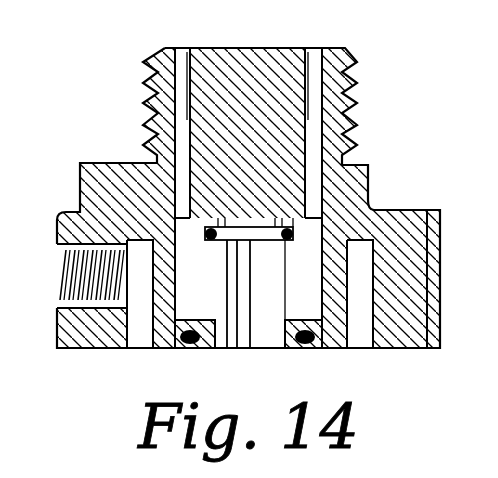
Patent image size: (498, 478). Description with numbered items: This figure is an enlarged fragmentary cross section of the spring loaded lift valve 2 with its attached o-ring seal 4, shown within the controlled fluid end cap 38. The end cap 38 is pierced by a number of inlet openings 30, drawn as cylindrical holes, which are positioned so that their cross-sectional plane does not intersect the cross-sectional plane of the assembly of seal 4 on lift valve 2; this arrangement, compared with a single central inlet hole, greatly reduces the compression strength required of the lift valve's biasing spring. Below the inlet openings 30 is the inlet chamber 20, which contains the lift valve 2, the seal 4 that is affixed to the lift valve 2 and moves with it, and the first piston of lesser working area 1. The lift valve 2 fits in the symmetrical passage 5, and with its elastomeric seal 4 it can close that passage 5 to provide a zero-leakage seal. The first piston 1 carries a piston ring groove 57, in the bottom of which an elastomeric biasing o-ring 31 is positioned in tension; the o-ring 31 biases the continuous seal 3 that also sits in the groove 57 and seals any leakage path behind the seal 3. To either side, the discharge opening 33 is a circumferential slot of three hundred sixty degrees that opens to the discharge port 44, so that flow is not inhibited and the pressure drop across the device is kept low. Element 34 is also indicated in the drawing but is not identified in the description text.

The controlled fluid end cap 38 is at (128, 172).
The inlet opening 30 is at (183, 55).
The discharge port 44 is at (62, 262).
The discharge opening 33 is at (140, 305).
The inlet chamber 20 is at (214, 266).
The spring loaded lift valve 2 is at (243, 276).
The piston ring groove 57 is at (213, 300).
The o-ring seal 4 is at (289, 240).
The wall 34 is at (335, 283).
The first piston of lesser working area 1 is at (205, 349).
The symmetrical passage 5 is at (262, 340).
The biasing o-ring 31 is at (312, 348).
The continuous seal 3 is at (178, 342).